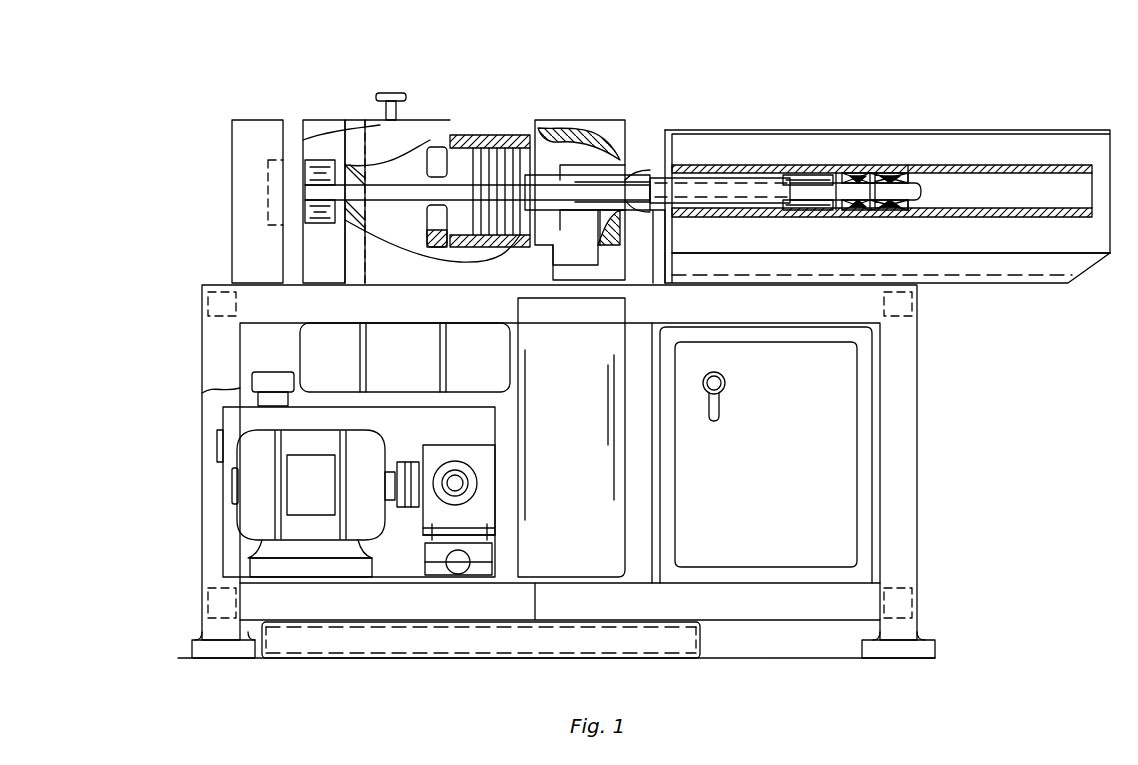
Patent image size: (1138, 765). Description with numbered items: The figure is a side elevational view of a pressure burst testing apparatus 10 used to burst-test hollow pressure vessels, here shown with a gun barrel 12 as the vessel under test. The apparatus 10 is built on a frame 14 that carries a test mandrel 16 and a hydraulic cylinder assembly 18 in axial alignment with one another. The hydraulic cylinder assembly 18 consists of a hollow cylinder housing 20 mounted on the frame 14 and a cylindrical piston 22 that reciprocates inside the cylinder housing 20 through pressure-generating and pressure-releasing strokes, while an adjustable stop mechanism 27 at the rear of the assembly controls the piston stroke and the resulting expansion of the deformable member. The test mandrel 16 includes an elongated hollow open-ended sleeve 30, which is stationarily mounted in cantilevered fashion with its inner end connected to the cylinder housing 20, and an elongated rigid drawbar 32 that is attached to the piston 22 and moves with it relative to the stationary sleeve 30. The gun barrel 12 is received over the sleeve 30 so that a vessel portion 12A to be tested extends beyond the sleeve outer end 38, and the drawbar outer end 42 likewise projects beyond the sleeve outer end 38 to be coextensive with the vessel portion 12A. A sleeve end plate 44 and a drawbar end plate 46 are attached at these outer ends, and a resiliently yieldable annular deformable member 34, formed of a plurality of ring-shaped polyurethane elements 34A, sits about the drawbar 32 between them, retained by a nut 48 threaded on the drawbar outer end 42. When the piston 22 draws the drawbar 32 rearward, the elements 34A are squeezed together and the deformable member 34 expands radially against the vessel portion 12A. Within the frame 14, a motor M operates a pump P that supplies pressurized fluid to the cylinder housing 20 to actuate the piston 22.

The pressure burst testing apparatus 10 is at (893, 45).
The gun barrel 12 is at (1040, 160).
The vessel portion to be tested 12A is at (896, 164).
The frame 14 is at (925, 348).
The test mandrel 16 is at (726, 165).
The hydraulic cylinder assembly 18 is at (490, 133).
The cylinder housing 20 is at (516, 262).
The piston 22 is at (552, 178).
The stop mechanism 27 is at (300, 185).
The hollow sleeve 30 is at (758, 188).
The drawbar 32 is at (655, 195).
The deformable member 34 is at (860, 230).
The ring-shaped elements 34A is at (888, 172).
The sleeve outer end 38 is at (840, 180).
The drawbar outer end 42 is at (921, 192).
The sleeve end plate 44 is at (836, 205).
The drawbar end plate 46 is at (902, 212).
The nut 48 is at (910, 173).
The motor M is at (262, 490).
The pump P is at (480, 503).